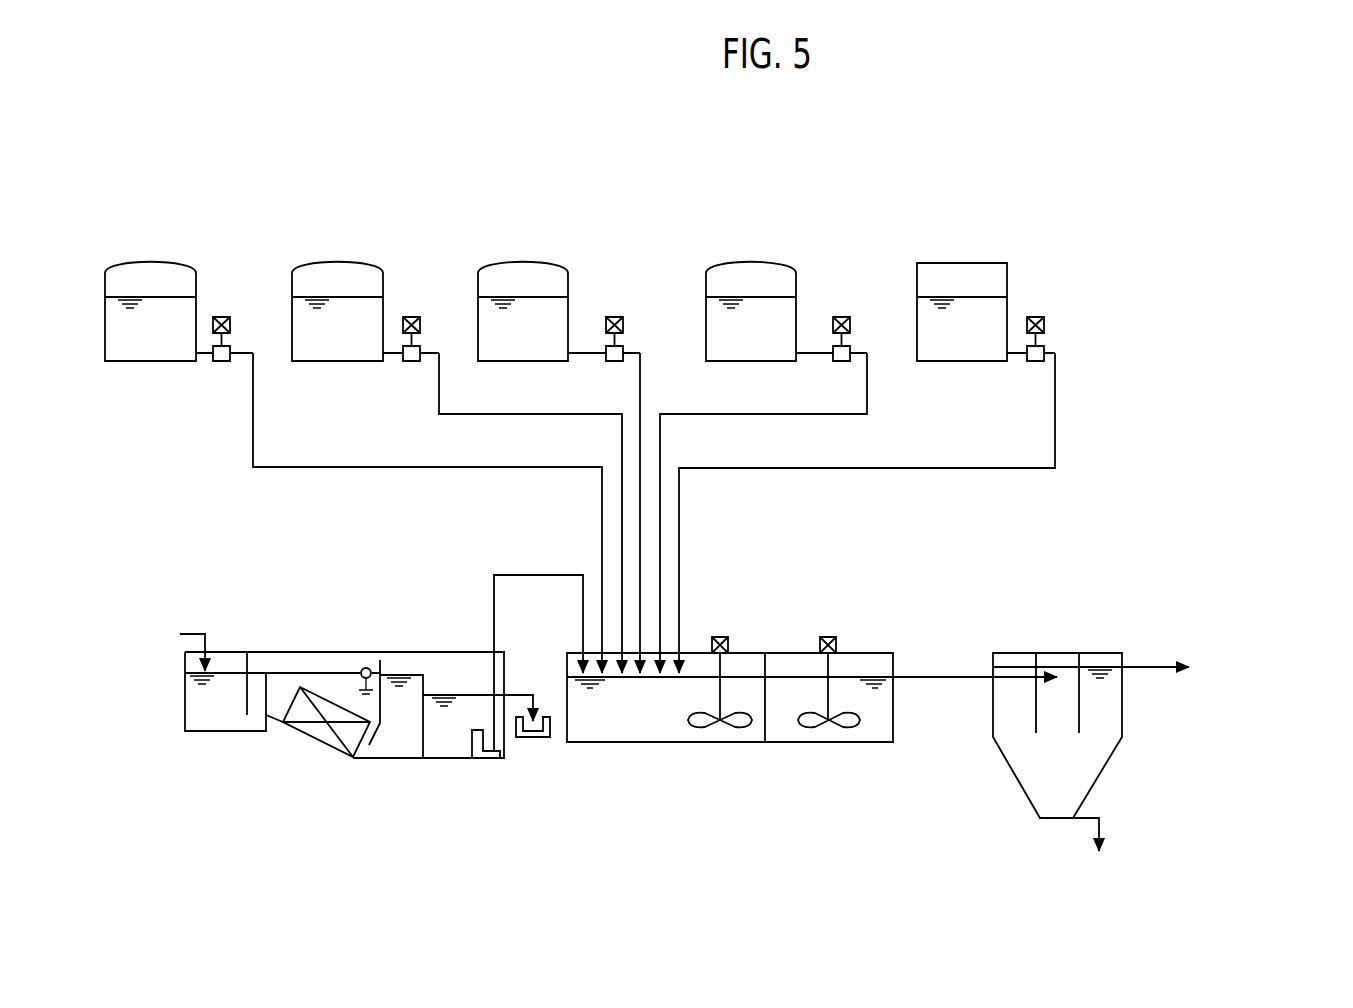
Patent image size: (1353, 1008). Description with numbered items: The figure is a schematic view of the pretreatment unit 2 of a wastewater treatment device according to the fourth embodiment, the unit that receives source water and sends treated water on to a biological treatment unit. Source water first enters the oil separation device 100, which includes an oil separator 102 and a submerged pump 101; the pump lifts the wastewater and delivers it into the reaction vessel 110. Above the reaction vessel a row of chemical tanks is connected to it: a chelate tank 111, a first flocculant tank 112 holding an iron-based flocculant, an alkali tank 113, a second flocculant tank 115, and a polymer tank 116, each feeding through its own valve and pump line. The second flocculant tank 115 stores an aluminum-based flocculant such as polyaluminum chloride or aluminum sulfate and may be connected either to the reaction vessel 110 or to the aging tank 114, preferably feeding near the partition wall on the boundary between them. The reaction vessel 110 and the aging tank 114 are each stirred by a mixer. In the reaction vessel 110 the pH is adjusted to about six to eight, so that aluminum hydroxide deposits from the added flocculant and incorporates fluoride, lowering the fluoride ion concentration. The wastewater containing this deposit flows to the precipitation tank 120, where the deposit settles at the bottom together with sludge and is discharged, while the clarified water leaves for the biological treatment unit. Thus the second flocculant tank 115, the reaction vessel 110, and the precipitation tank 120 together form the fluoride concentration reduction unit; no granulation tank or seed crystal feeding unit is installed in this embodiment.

The pretreatment unit 2 is at (440, 582).
The oil separation device 100 is at (288, 652).
The submerged pump 101 is at (478, 744).
The oil separator 102 is at (325, 737).
The reaction vessel 110 is at (634, 745).
The chelate tank 111 is at (134, 262).
The first flocculant tank 112 is at (320, 262).
The alkali tank 113 is at (506, 262).
The aging tank 114 is at (856, 745).
The second flocculant tank 115 is at (734, 262).
The polymer tank 116 is at (963, 262).
The precipitation tank 120 is at (1053, 820).